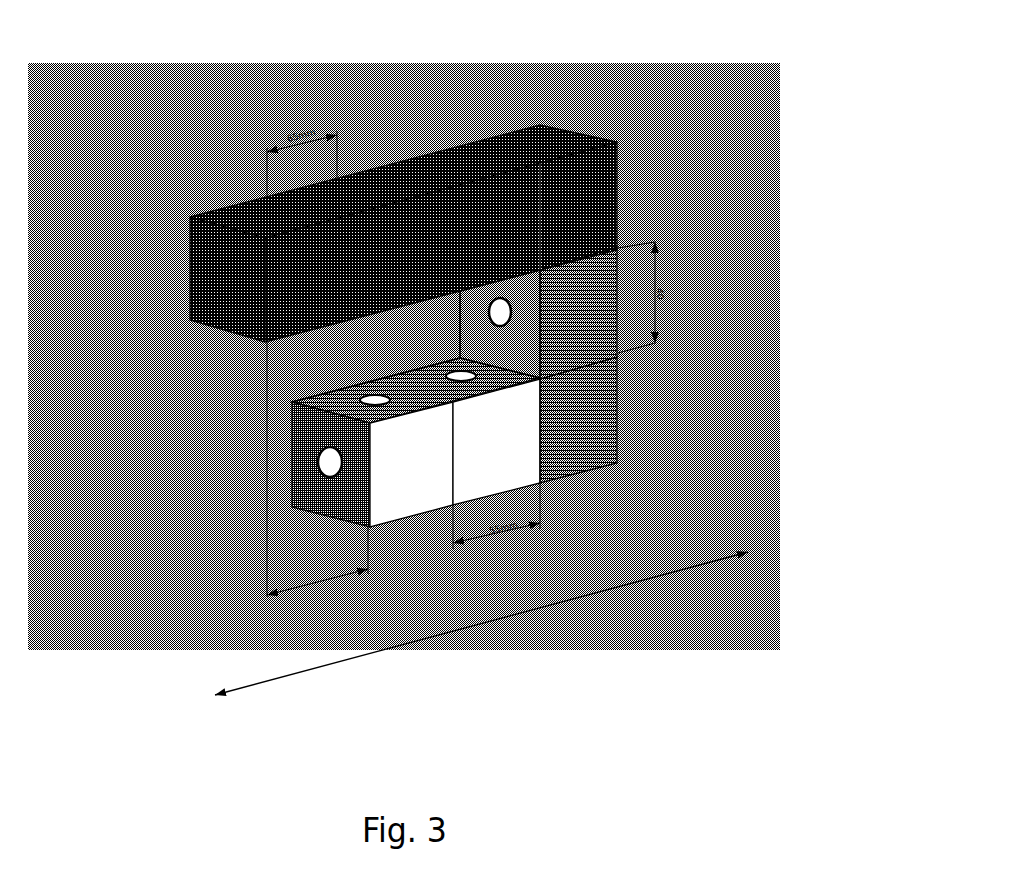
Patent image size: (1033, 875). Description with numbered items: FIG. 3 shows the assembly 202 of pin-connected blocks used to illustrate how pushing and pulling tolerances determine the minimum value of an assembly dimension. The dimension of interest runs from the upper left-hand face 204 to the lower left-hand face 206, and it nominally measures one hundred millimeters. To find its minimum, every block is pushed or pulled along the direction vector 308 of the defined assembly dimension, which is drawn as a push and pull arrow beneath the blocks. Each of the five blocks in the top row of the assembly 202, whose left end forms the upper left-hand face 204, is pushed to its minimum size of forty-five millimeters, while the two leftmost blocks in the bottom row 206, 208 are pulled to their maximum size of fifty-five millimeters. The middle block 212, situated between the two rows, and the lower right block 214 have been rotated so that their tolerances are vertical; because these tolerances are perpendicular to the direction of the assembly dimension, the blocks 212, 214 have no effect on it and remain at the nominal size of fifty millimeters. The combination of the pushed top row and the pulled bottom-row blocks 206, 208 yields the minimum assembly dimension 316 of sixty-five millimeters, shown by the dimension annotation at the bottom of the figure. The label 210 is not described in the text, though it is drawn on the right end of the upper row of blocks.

The assembly 202 is at (641, 100).
The upper left-hand face 204 is at (190, 321).
The lower left-hand face 206 is at (333, 498).
The bottom row block 208 is at (475, 491).
The upper segment 210 is at (600, 218).
The middle block 212 is at (600, 335).
The lower right block 214 is at (600, 426).
The direction vector 308 is at (478, 627).
The minimum assembly dimension 316 is at (272, 592).